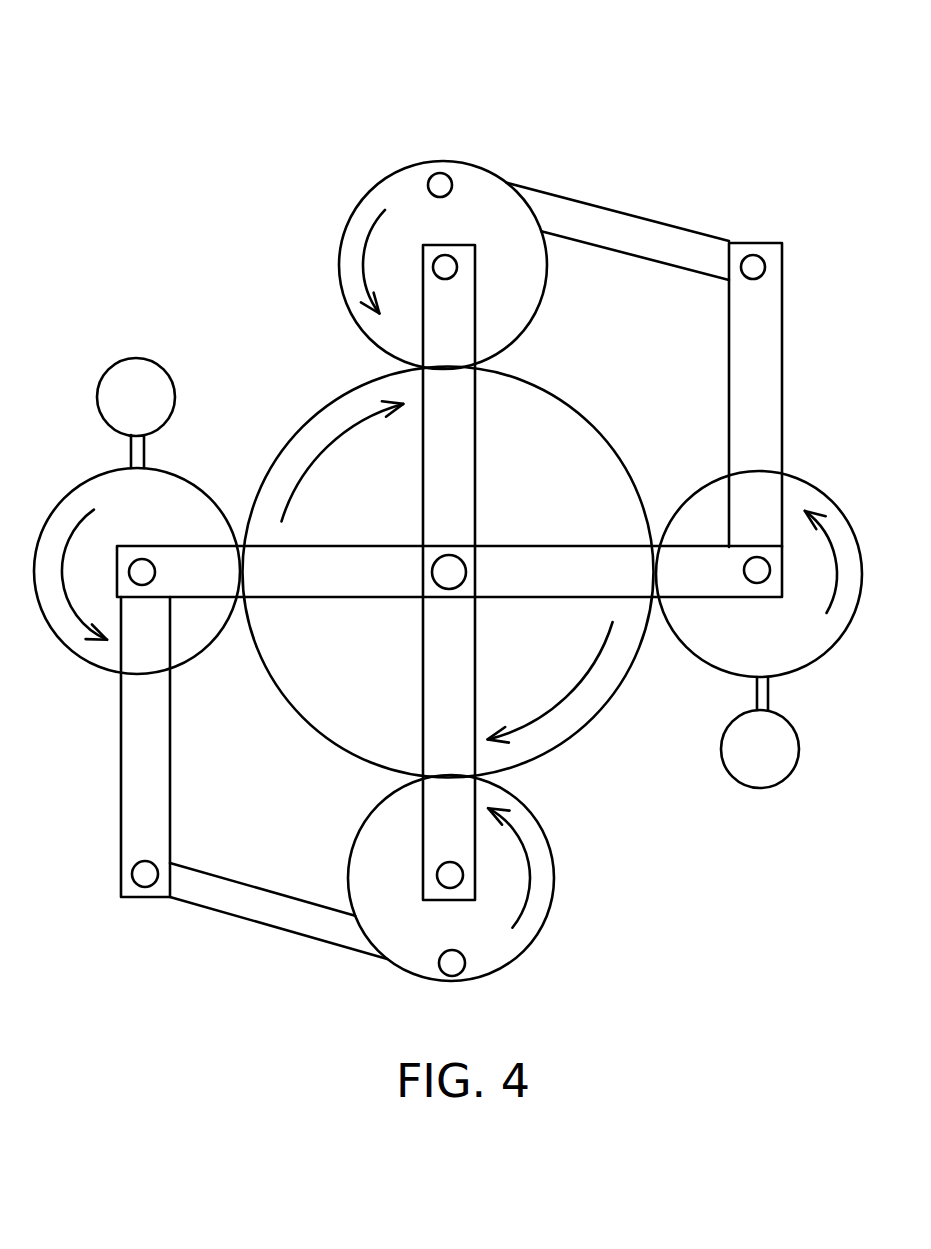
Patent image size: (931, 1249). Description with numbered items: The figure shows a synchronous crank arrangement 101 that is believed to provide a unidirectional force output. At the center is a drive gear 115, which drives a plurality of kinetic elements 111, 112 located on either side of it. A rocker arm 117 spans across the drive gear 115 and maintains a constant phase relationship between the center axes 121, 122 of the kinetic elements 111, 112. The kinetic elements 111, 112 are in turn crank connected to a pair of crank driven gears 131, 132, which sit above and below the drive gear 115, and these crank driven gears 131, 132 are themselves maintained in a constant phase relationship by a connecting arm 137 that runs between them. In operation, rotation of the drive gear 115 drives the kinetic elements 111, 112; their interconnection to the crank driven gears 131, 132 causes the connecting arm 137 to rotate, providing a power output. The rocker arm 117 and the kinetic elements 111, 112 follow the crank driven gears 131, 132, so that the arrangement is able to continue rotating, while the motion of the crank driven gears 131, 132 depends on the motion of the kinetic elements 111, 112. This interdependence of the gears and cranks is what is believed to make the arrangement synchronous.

The synchronous crank arrangement 101 is at (505, 108).
The kinetic element 111 is at (145, 378).
The kinetic element 112 is at (762, 768).
The drive gear 115 is at (318, 412).
The rocker arm 117 is at (600, 567).
The center axis 121 is at (142, 570).
The center axis 122 is at (757, 568).
The crank driven gear 131 is at (487, 952).
The crank driven gear 132 is at (398, 198).
The connecting arm 137 is at (463, 745).